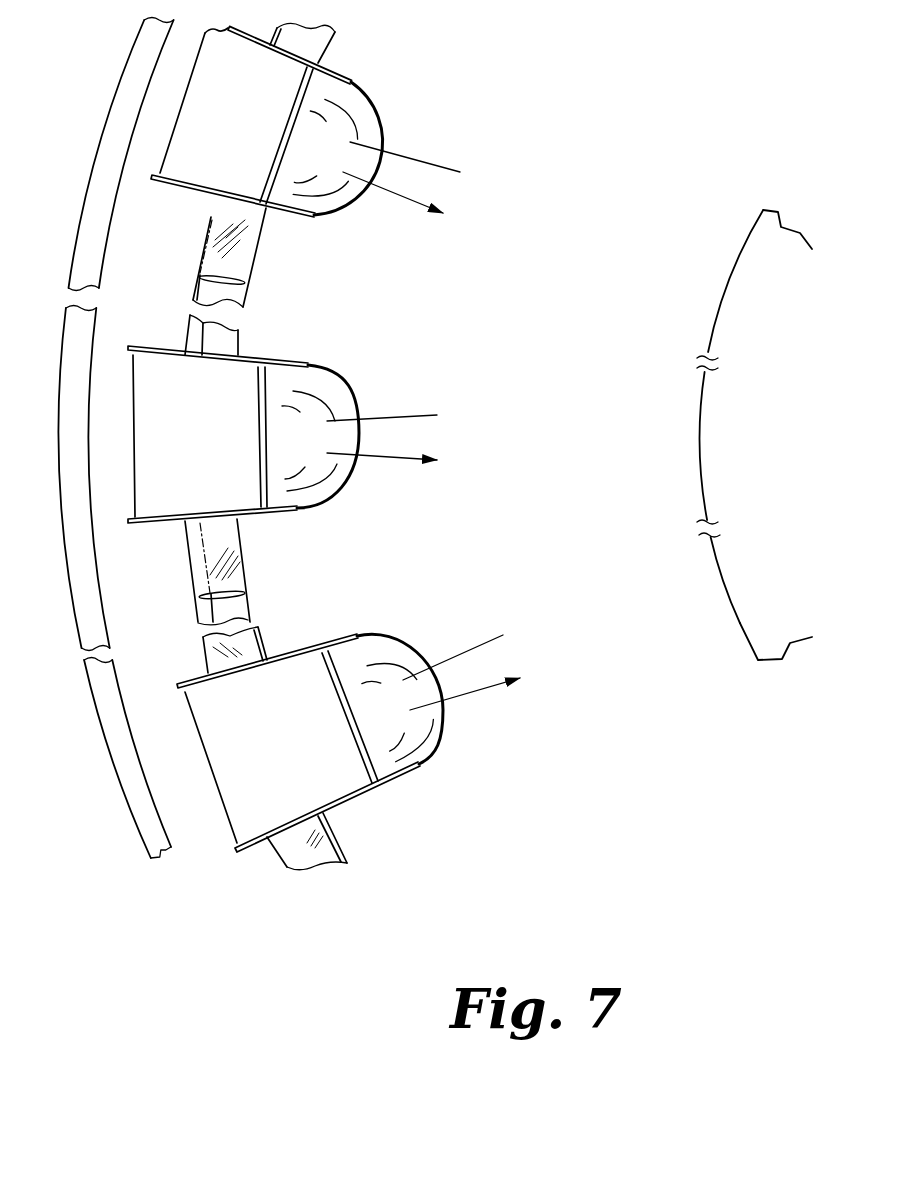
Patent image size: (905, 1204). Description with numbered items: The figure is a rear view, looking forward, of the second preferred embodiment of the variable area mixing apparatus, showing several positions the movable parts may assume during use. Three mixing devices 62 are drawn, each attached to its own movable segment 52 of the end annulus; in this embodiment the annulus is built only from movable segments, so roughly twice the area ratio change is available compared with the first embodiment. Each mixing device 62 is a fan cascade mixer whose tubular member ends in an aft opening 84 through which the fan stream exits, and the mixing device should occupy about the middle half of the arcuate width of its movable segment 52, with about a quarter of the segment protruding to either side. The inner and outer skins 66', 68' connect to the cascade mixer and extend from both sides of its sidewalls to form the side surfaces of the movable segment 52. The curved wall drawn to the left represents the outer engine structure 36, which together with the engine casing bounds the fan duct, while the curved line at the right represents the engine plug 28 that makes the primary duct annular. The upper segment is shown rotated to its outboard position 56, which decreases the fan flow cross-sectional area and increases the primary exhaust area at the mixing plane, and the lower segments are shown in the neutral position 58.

The engine plug 28 is at (738, 627).
The outer engine structure 36 is at (93, 242).
The movable segment 52 is at (210, 217).
The outboard position 56 is at (165, 107).
The neutral position 58 is at (118, 455).
The mixing device 62 is at (395, 88).
The inner skin 66' is at (212, 742).
The outer skin 68' is at (264, 431).
The aft opening 84 is at (337, 477).